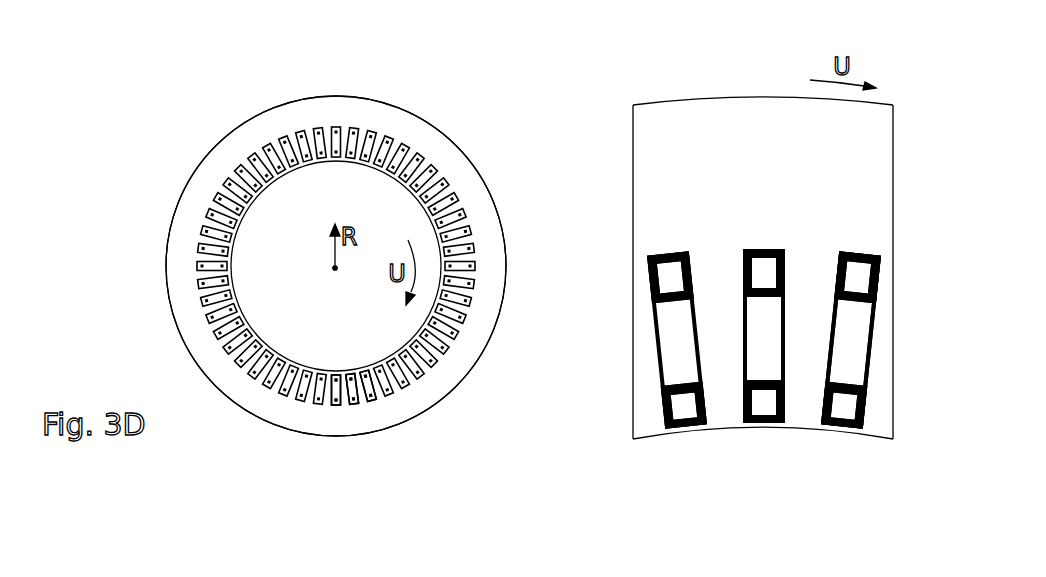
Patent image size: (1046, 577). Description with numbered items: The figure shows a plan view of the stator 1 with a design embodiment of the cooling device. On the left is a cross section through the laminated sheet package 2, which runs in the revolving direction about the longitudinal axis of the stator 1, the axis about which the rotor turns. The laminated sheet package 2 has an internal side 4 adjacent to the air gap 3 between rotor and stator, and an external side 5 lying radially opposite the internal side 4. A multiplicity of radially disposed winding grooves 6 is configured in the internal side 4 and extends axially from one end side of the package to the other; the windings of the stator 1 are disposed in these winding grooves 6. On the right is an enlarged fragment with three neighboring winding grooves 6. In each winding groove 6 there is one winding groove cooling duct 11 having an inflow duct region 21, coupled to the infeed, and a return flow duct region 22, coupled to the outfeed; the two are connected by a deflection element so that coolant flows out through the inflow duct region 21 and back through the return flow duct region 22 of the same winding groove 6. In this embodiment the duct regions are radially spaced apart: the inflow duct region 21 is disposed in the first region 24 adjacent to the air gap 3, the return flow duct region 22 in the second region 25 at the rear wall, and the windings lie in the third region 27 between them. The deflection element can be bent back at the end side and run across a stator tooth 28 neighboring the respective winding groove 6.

The stator 1 is at (408, 85).
The laminated sheet package 2 is at (333, 110).
The air gap 3 is at (328, 197).
The internal side 4 is at (282, 190).
The external side 5 is at (258, 103).
The winding groove 6 is at (330, 402).
The winding groove cooling duct 11 is at (352, 409).
The inflow duct region 21 is at (680, 404).
The return flow duct region 22 is at (670, 278).
The first region 24 is at (870, 407).
The second region 25 is at (885, 287).
The third region 27 is at (875, 347).
The stator tooth 28 is at (728, 392).